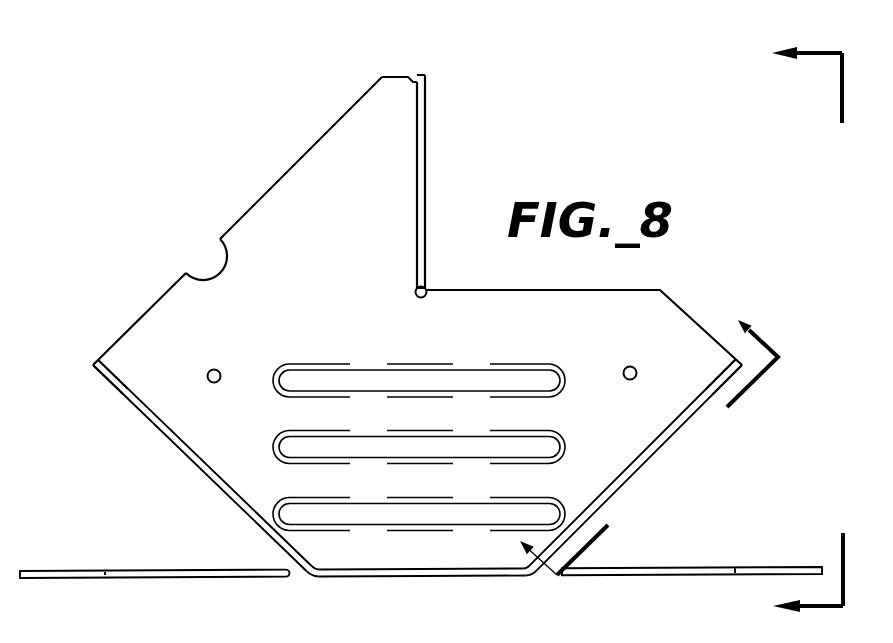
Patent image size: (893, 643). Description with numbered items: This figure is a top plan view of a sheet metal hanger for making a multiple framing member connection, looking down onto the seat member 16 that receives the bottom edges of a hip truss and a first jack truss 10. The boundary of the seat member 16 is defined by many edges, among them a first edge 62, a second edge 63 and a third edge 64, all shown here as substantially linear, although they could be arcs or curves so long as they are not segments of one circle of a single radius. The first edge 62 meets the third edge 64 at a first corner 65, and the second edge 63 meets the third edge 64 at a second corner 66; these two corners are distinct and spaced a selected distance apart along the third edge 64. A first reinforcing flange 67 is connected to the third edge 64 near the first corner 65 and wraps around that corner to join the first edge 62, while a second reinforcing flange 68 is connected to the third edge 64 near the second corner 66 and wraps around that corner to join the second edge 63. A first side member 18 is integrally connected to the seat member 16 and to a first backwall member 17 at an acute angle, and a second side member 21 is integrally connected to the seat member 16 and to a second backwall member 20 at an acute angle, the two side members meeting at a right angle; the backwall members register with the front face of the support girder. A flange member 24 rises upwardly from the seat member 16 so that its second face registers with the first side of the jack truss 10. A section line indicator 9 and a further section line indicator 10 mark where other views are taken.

The seat member 16 is at (340, 118).
The flange member 24 is at (427, 117).
The second backwall member 20 is at (140, 408).
The second edge 63 is at (123, 383).
The first reinforcing flange 67 is at (307, 572).
The first side member 18 is at (667, 443).
The first edge 62 is at (697, 403).
The second reinforcing flange 68 is at (533, 572).
The third edge 64 is at (422, 570).
The first corner 65 is at (516, 569).
The second corner 66 is at (315, 553).
The second side member 21 is at (75, 570).
The first backwall member 17 is at (695, 565).
The section line 9- 9 is at (661, 463).
The first jack truss 10 is at (788, 330).